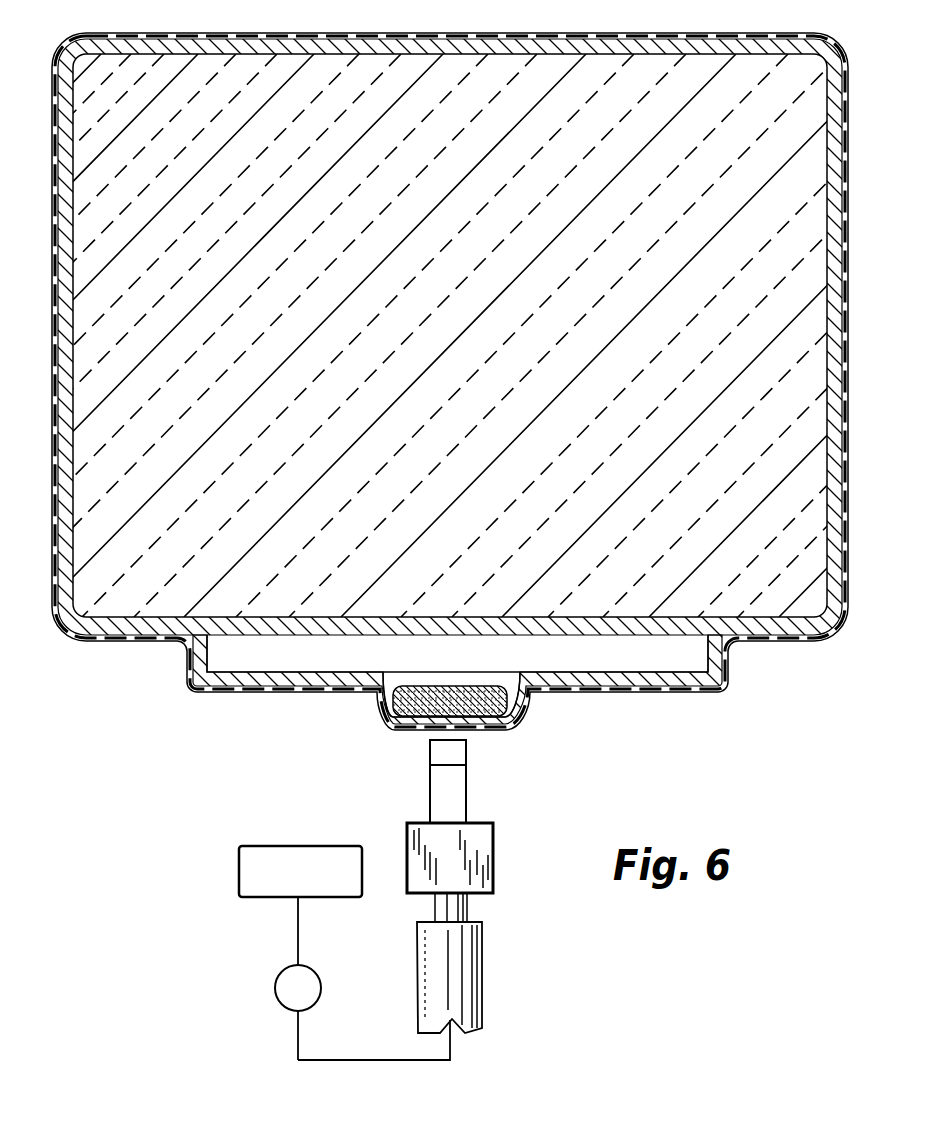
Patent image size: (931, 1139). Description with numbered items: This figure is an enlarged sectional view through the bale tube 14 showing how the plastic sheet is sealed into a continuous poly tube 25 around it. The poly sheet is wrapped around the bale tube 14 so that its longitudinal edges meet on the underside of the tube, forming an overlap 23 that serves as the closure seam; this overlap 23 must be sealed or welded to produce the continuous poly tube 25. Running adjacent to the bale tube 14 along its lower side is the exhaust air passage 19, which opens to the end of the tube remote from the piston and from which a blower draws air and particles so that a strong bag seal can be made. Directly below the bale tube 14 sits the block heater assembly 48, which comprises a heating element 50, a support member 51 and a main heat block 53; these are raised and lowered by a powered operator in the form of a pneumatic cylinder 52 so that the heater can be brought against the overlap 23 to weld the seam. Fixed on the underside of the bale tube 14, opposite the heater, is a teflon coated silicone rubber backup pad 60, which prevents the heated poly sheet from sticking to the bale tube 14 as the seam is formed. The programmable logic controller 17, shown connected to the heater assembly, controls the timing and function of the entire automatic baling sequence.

The bale tube 14 is at (640, 40).
The poly tube 25 is at (494, 36).
The exhaust air passage 19 is at (706, 663).
The overlap 23 is at (392, 739).
The backup pad 60 is at (515, 702).
The block heater assembly 48 is at (506, 891).
The heating element 50 is at (467, 765).
The main heat block 53 is at (440, 752).
The support member 51 is at (445, 790).
The pneumatic cylinder 52 is at (482, 1008).
The programmable logic controller 17 is at (268, 899).